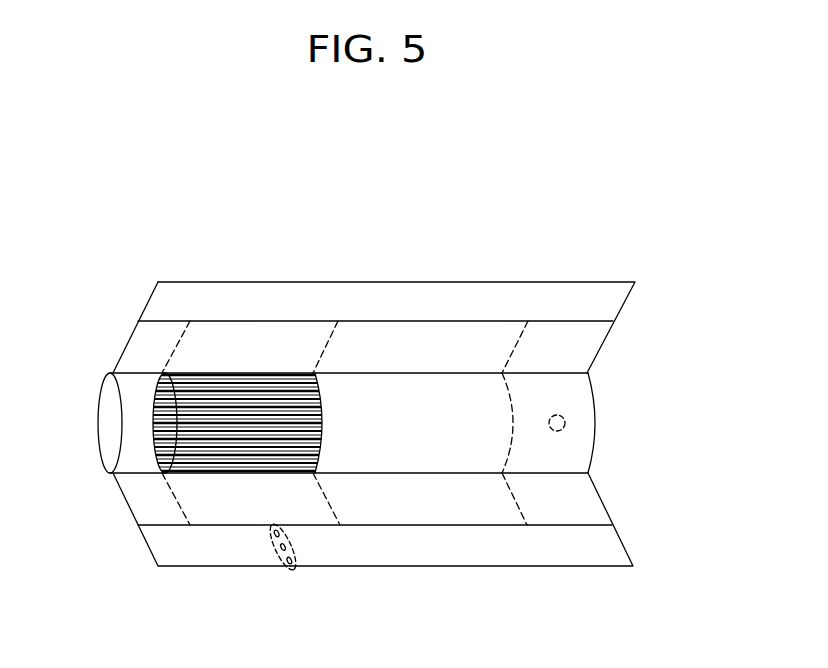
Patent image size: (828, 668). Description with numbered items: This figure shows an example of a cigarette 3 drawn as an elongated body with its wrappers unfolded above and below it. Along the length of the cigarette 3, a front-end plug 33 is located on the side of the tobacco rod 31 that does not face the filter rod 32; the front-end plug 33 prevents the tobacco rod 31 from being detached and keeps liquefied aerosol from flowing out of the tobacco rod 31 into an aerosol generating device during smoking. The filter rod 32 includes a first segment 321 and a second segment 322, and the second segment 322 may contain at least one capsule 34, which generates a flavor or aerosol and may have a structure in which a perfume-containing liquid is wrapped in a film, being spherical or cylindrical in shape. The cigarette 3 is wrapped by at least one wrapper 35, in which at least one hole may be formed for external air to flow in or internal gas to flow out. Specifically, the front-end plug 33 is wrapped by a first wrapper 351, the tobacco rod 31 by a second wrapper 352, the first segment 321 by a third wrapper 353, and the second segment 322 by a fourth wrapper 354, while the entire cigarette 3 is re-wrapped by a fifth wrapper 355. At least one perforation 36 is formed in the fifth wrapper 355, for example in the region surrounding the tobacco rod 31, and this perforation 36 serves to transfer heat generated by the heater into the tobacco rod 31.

The cigarette 3 is at (624, 247).
The tobacco rod 31 is at (232, 398).
The filter rod 32 is at (452, 228).
The first segment 321 is at (462, 400).
The second segment 322 is at (548, 392).
The front-end plug 33 is at (140, 385).
The capsule 34 is at (565, 423).
The wrapper 35 is at (589, 472).
The first wrapper 351 is at (138, 503).
The second wrapper 352 is at (223, 508).
The third wrapper 353 is at (423, 508).
The fourth wrapper 354 is at (548, 508).
The fifth wrapper 355 is at (358, 552).
The perforation 36 is at (279, 556).